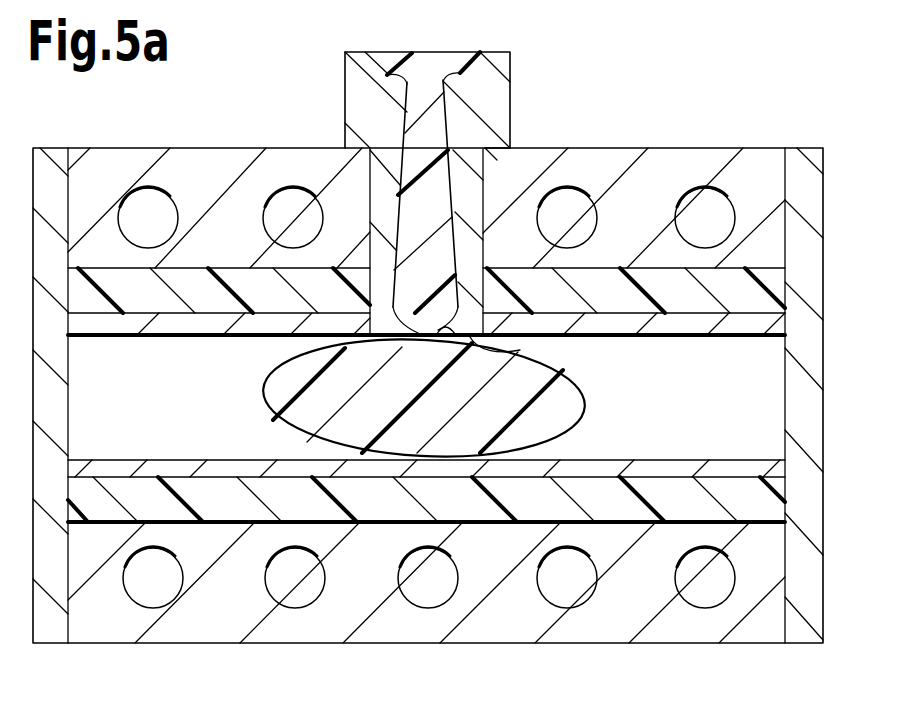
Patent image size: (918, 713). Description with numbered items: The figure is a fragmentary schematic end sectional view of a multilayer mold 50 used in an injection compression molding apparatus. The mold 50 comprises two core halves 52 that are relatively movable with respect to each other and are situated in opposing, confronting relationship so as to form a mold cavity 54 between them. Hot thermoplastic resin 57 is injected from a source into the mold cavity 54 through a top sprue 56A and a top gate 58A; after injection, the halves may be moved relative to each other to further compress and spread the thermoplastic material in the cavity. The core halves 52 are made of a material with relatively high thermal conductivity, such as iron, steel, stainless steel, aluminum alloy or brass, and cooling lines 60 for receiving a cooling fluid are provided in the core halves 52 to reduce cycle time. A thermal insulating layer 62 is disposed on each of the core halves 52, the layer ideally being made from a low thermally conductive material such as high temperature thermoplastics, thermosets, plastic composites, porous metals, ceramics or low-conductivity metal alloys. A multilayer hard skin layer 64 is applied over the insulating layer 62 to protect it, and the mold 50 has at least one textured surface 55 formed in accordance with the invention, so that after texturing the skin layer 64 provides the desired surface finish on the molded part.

The multilayer mold 50 is at (729, 139).
The core halves 52 is at (598, 148).
The mold cavity 54 is at (720, 422).
The textured surface 55 is at (257, 458).
The top sprue 56A is at (510, 90).
The hot thermoplastic resin 57 is at (574, 415).
The top gate 58A is at (472, 338).
The cooling lines 60 is at (160, 195).
The thermal insulating layer 62 is at (93, 483).
The multilayer hard skin layer 64 is at (167, 467).